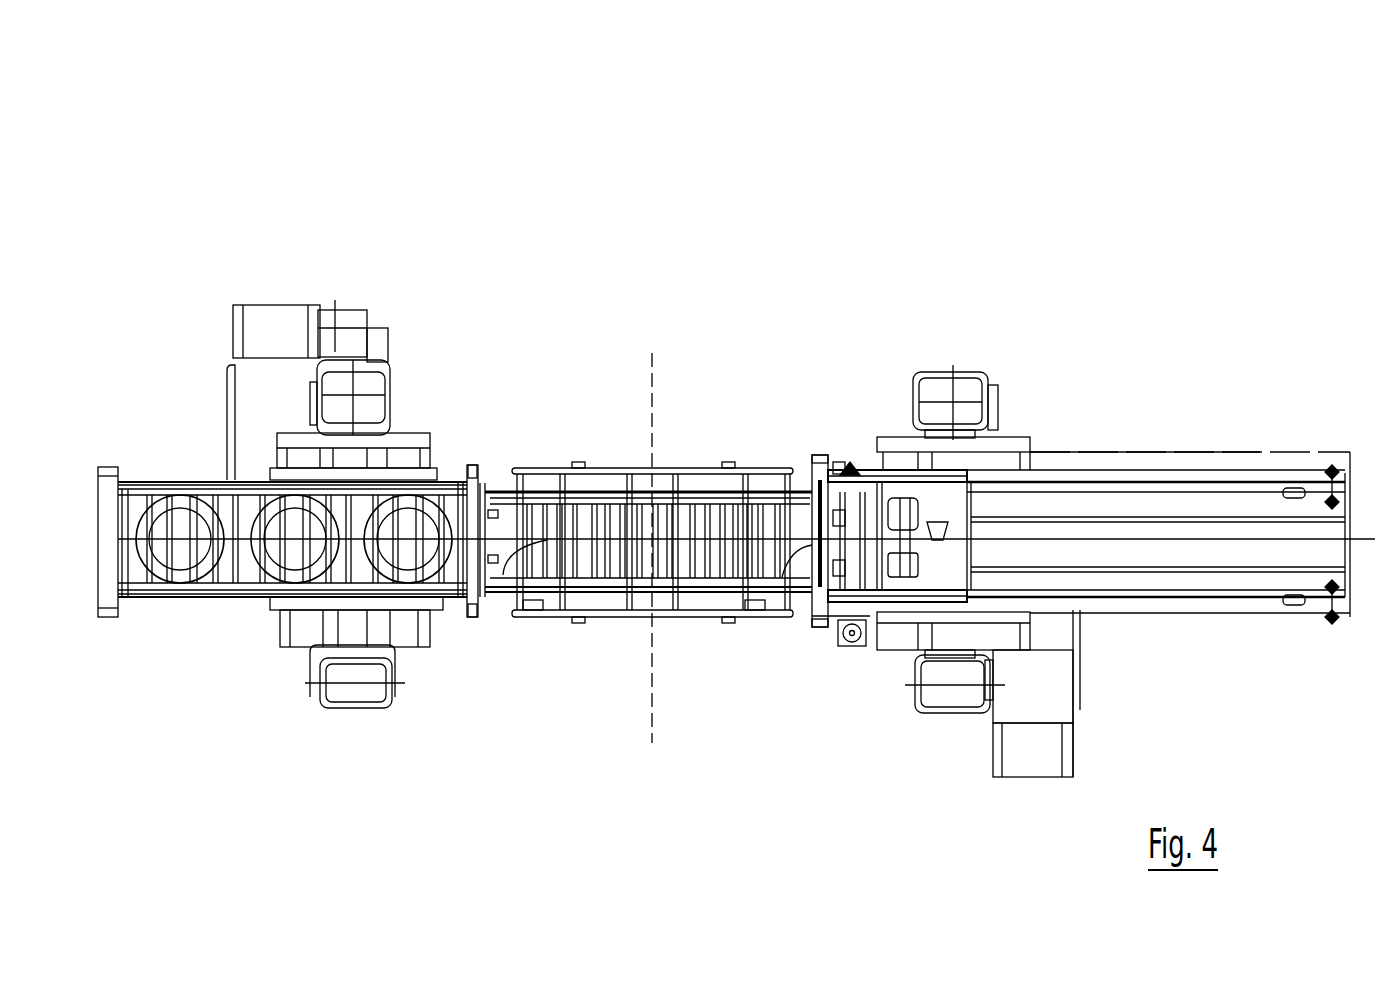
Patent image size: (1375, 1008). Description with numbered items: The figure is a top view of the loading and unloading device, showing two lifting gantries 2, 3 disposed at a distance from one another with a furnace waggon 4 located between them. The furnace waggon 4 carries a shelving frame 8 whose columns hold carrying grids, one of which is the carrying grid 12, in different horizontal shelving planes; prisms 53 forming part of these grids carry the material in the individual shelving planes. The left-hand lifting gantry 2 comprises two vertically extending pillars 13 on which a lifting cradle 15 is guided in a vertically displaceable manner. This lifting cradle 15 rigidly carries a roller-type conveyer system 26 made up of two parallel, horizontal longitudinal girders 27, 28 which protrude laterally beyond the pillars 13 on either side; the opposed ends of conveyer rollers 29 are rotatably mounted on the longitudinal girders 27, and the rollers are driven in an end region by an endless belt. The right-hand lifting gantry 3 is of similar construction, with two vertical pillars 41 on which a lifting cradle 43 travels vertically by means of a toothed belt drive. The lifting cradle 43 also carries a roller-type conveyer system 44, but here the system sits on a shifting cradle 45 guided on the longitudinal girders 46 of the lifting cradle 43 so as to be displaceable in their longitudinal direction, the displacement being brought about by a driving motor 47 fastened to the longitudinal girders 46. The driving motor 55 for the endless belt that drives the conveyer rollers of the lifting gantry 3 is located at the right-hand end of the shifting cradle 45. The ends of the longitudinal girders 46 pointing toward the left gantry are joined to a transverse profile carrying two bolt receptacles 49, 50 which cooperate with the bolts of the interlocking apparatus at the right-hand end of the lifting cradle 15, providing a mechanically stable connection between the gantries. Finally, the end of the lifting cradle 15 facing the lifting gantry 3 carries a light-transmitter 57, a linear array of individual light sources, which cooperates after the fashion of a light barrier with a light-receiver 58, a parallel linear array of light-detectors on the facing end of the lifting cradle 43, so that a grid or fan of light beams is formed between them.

The lifting gantry 2 is at (282, 232).
The lifting gantry 3 is at (1155, 228).
The furnace waggon 4 is at (608, 440).
The shelving frame 8 is at (669, 450).
The carrying grid 12 is at (700, 470).
The pillar 13 is at (353, 362).
The lifting cradle 15 is at (425, 425).
The roller-type conveyer system 26 is at (212, 478).
The longitudinal girder 27 is at (205, 600).
The longitudinal girder 28 is at (130, 480).
The conveyer roller 29 is at (160, 600).
The vertical pillar 41 is at (960, 388).
The lifting cradle 43 is at (1135, 438).
The roller-type conveyer system 44 is at (756, 480).
The shifting cradle 45 is at (755, 605).
The longitudinal girder 46 is at (1218, 482).
The driving motor 47 is at (853, 650).
The bolt receptacle 49 is at (512, 477).
The bolt receptacle 50 is at (500, 605).
The prism 53 is at (558, 485).
The driving motor 55 is at (917, 545).
The light-transmitter 57 is at (540, 600).
The light-receiver 58 is at (790, 600).